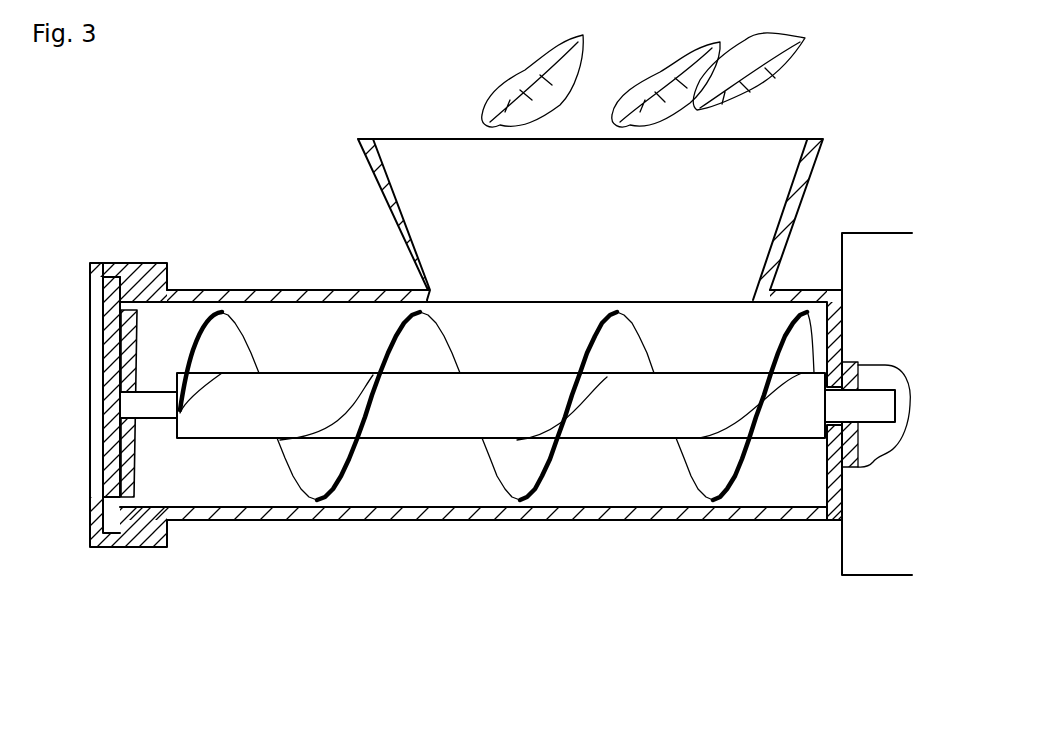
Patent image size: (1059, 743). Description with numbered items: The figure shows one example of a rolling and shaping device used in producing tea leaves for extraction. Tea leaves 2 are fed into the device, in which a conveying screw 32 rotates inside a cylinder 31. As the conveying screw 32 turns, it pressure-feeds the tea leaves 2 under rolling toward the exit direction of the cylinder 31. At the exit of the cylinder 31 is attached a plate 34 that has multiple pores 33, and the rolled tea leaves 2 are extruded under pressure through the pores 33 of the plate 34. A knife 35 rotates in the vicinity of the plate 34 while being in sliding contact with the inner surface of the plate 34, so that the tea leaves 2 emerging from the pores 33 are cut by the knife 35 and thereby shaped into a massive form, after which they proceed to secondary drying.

The tea leaves 2 is at (758, 80).
The cylinder 31 is at (642, 520).
The conveying screw 32 is at (457, 443).
The pores 33 is at (110, 335).
The plate 34 is at (113, 280).
The knife 35 is at (163, 352).